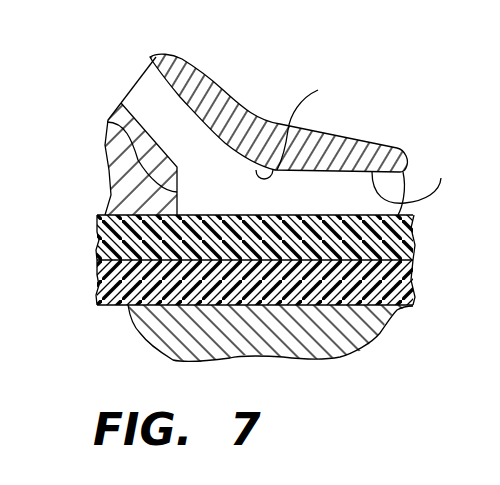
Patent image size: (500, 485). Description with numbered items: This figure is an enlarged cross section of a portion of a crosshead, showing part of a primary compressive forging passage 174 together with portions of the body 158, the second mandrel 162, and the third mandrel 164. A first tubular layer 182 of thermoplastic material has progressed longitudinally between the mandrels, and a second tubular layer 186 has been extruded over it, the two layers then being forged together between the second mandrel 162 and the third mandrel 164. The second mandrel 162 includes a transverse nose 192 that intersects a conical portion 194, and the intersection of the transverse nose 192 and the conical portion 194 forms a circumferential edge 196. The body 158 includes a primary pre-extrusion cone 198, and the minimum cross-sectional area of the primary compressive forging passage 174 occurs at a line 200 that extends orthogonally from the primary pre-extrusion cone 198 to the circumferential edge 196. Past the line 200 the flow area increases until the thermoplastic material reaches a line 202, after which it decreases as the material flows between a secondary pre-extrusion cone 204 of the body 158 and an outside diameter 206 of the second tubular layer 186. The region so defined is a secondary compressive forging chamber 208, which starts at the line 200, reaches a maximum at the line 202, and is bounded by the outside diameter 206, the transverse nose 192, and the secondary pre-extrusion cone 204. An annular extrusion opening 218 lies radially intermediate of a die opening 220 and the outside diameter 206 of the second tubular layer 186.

The body 158 is at (274, 80).
The second mandrel 162 is at (107, 192).
The third mandrel 164 is at (145, 358).
The primary compressive forging passage 174 is at (152, 95).
The first tubular layer 182 is at (97, 283).
The second tubular layer 186 is at (97, 237).
The transverse nose 192 is at (107, 152).
The conical portion 194 is at (119, 103).
The circumferential edge 196 is at (178, 172).
The primary pre-extrusion cone 198 is at (154, 93).
The line 200 is at (207, 146).
The line 202 is at (190, 198).
The secondary pre-extrusion cone 204 is at (318, 91).
The outside diameter 206 is at (100, 216).
The secondary compressive forging chamber 208 is at (309, 113).
The annular extrusion opening 218 is at (350, 195).
The die opening 220 is at (419, 177).